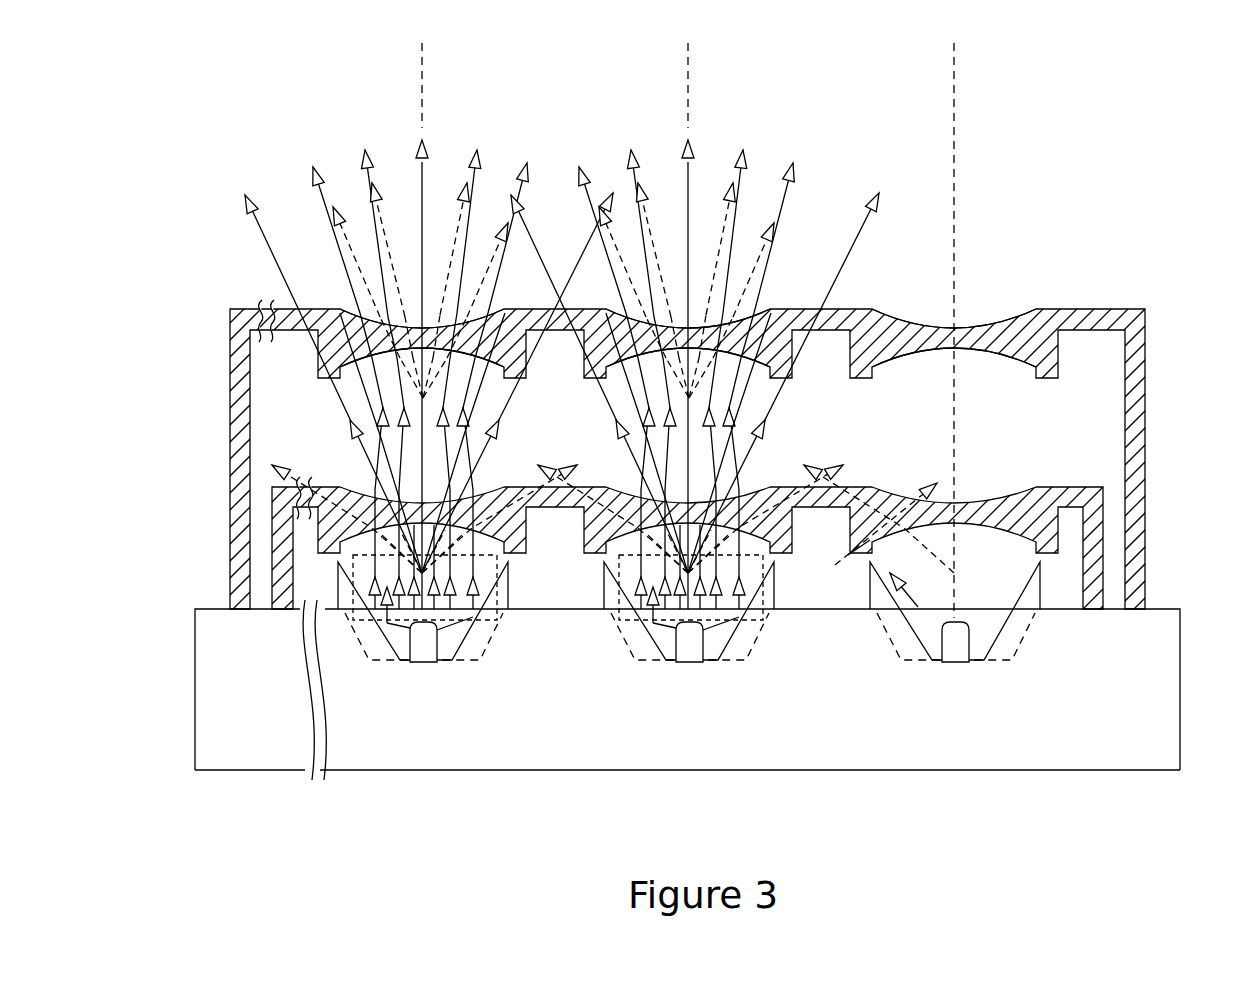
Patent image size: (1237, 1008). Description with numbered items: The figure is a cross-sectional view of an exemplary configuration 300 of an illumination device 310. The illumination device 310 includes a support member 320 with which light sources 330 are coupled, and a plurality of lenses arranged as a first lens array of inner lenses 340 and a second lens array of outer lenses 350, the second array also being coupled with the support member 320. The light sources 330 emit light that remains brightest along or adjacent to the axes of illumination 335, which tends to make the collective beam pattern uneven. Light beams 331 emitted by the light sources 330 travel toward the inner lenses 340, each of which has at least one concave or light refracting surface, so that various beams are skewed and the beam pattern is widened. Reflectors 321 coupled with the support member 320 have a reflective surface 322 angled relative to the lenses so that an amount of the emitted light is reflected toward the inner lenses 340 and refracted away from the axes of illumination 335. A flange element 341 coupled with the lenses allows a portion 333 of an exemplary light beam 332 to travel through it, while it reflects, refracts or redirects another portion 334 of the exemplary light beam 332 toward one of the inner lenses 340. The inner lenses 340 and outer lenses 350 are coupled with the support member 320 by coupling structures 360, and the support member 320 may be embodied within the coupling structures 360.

The exemplary configuration 300 is at (618, 452).
The illumination device 310 is at (412, 791).
The support member 320 is at (1100, 701).
The reflectors 321 is at (883, 633).
The reflective surface 322 is at (992, 618).
The light sources 330 is at (423, 663).
The light beams 331 is at (355, 628).
The exemplary light beam 332 is at (928, 570).
The portion of exemplary light beam 333 is at (817, 482).
The another portion of exemplary light beam 334 is at (933, 485).
The axes of illumination 335 is at (422, 130).
The inner lenses 340 is at (482, 487).
The flange element 341 is at (862, 548).
The outer lenses 350 is at (523, 307).
The coupling structures 360 is at (1098, 572).